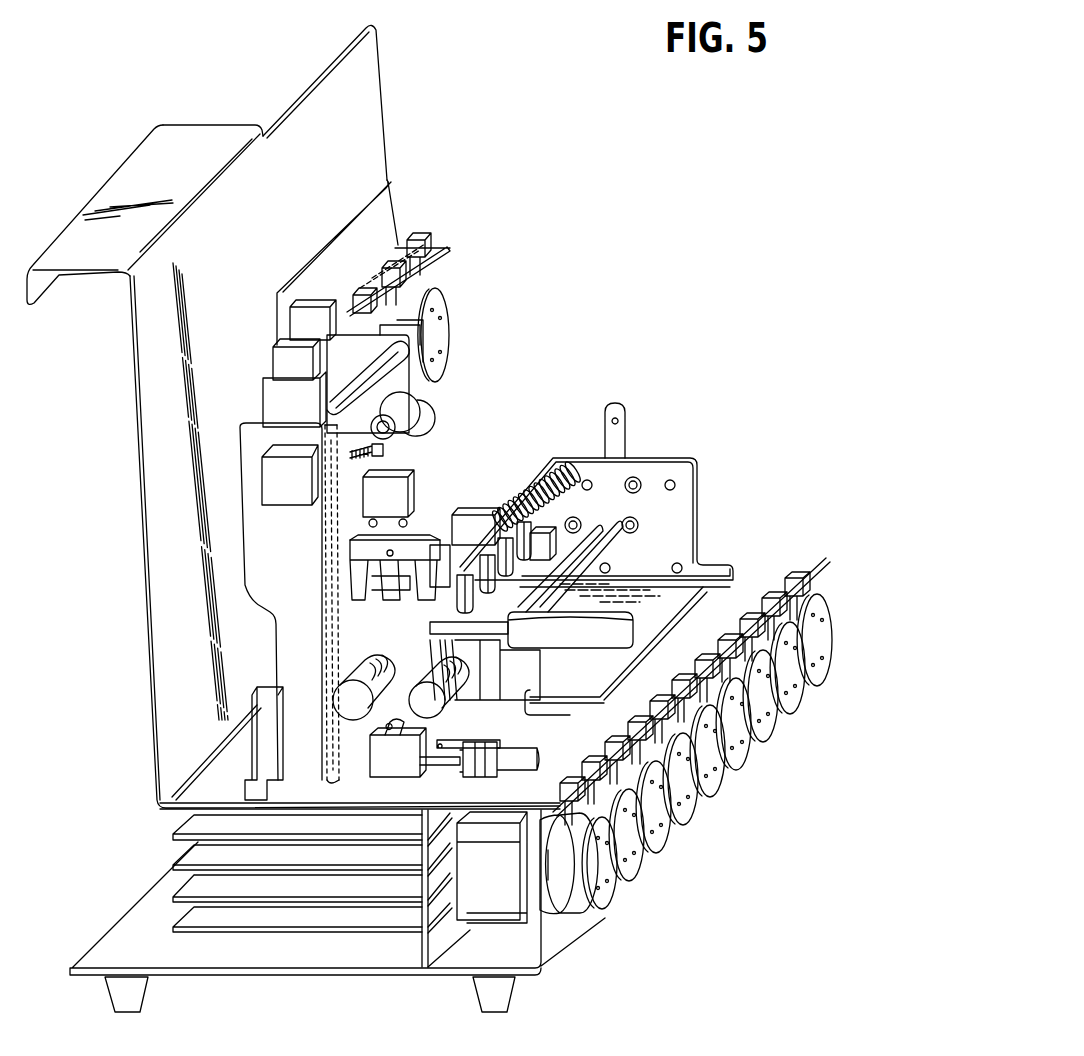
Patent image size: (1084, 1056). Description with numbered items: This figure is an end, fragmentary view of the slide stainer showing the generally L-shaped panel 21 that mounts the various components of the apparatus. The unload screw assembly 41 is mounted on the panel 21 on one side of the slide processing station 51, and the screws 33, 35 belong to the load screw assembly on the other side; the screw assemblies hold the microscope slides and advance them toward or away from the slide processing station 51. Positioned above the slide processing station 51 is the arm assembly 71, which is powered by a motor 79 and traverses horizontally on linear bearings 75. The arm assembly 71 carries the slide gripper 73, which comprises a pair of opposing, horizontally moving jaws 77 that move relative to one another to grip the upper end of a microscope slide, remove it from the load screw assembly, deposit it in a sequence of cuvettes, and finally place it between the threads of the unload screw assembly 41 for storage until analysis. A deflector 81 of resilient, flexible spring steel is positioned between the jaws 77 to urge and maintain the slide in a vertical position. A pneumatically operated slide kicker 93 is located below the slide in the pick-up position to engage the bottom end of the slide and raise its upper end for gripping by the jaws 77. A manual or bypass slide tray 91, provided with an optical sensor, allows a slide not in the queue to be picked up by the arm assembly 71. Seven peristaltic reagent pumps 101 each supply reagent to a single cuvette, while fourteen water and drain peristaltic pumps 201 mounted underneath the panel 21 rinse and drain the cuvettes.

The panel 21 is at (370, 125).
The screw 33 is at (427, 698).
The screw 35 is at (347, 702).
The unload screw assembly 41 is at (657, 477).
The slide processing station 51 is at (500, 607).
The arm assembly 71 is at (287, 485).
The slide gripper 73 is at (387, 493).
The linear bearings 75 is at (378, 360).
The jaws 77 is at (375, 548).
The motor 79 is at (437, 420).
The deflector 81 is at (340, 615).
The manual slide tray 91 is at (610, 636).
The slide kicker 93 is at (392, 765).
The peristaltic reagent pump 101 is at (442, 332).
The water and drain peristaltic pumps 201 is at (823, 640).